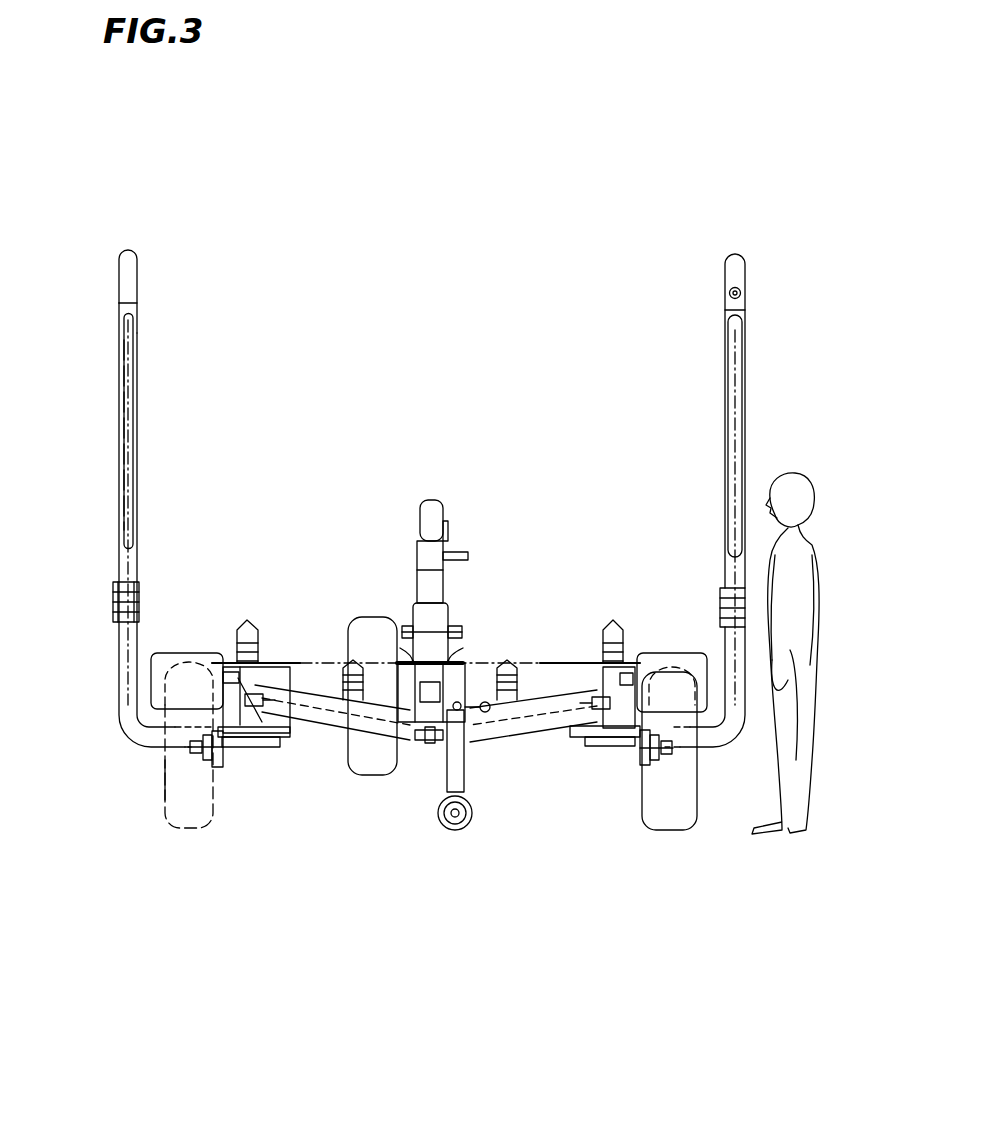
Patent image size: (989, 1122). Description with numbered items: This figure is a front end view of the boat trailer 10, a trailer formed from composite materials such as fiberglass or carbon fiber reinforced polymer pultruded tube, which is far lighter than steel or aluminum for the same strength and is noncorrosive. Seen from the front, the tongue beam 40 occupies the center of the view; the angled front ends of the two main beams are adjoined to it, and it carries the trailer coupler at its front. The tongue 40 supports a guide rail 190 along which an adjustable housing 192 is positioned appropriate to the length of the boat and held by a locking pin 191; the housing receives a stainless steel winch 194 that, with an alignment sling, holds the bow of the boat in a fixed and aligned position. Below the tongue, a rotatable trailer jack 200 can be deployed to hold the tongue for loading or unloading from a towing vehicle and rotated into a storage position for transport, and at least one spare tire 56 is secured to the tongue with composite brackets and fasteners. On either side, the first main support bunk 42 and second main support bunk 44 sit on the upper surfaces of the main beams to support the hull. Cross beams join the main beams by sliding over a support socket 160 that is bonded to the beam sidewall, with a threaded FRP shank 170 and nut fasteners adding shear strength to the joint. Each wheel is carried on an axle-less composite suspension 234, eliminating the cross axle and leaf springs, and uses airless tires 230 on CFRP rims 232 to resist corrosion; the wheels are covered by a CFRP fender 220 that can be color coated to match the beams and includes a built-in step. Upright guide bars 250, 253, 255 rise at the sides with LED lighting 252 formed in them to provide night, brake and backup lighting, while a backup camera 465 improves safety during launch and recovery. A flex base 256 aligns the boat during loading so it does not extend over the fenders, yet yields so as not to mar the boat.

The boat trailer 10 is at (330, 934).
The tongue beam 40 is at (449, 686).
The first main support bunk 42 is at (613, 622).
The second main support bunk 44 is at (248, 621).
The spare tire 56 is at (380, 760).
The support socket 160 is at (273, 707).
The threaded FRP shank 170 is at (264, 699).
The guide rail 190 is at (445, 608).
The locking pin 191 is at (457, 632).
The adjustable housing 192 is at (431, 557).
The winch 194 is at (433, 520).
The rotatable trailer jack 200 is at (456, 769).
The fender 220 is at (186, 655).
The tires 230 is at (186, 813).
The CFRP rims 232 is at (178, 780).
The composite suspension 234 is at (247, 751).
The guide bar 250 is at (140, 425).
The LED lighting 252 is at (134, 365).
The guide bar 253 is at (141, 283).
The guide bar 255 is at (740, 272).
The flex base 256 is at (126, 602).
The backup camera 465 is at (744, 294).